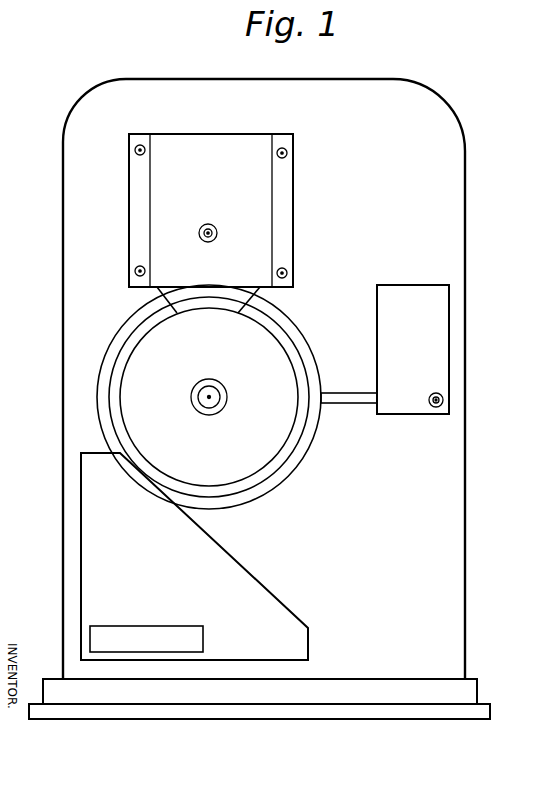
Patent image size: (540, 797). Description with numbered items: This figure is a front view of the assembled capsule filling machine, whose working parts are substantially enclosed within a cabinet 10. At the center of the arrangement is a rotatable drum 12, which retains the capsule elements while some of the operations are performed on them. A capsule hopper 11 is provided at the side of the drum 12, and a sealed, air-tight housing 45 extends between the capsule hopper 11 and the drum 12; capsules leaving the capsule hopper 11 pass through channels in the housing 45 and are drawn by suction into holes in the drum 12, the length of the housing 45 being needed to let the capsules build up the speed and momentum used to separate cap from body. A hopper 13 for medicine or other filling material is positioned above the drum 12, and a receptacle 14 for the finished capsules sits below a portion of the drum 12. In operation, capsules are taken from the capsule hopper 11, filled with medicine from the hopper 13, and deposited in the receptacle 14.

The cabinet 10 is at (465, 500).
The capsule hopper 11 is at (450, 310).
The rotatable drum 12 is at (293, 468).
The hopper 13 is at (245, 147).
The receptacle 14 is at (250, 575).
The housing 45 is at (340, 393).